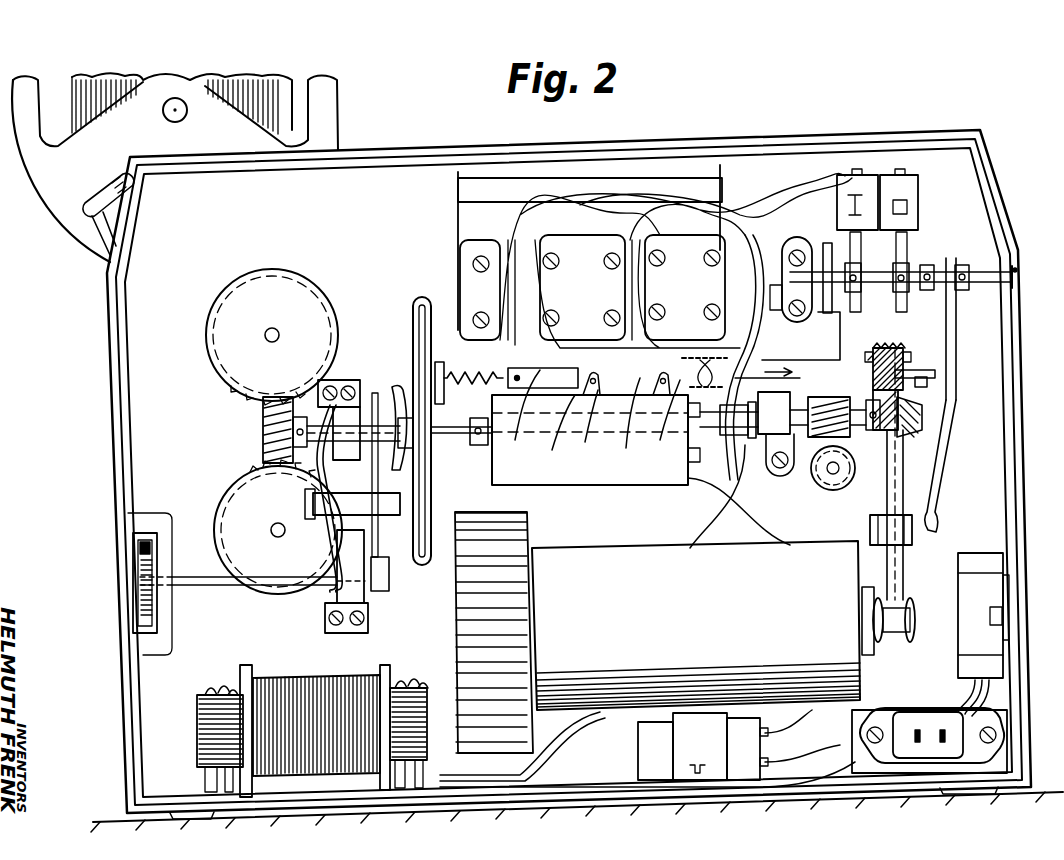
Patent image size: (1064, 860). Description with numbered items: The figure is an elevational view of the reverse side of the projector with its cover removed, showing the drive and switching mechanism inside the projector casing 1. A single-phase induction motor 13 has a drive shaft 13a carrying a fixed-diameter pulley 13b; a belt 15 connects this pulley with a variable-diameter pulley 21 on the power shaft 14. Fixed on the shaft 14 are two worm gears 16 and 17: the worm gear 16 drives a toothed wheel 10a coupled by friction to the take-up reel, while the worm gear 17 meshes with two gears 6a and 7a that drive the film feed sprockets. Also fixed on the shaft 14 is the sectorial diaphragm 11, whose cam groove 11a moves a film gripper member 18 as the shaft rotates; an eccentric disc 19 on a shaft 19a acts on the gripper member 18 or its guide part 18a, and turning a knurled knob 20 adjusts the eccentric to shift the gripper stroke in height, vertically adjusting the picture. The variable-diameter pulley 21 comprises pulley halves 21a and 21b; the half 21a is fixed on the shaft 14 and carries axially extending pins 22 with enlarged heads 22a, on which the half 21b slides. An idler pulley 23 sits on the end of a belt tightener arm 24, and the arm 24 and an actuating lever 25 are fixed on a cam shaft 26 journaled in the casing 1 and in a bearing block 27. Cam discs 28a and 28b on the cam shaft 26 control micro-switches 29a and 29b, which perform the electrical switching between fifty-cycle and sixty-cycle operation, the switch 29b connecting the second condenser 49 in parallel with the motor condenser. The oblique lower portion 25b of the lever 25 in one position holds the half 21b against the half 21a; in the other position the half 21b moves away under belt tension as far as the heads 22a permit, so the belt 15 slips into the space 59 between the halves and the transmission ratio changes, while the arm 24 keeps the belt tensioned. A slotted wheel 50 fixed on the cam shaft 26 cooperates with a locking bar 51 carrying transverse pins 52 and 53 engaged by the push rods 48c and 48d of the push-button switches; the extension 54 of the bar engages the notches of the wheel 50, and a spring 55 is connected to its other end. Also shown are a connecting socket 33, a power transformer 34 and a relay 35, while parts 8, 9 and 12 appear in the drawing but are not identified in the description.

The projector casing 1 is at (148, 403).
The gear 6a is at (272, 290).
The gear 7a is at (242, 505).
The clamp 8 is at (65, 205).
The clamp bracket 9 is at (95, 232).
The toothed wheel 10a is at (838, 475).
The sectorial diaphragm 11 is at (431, 495).
The cam groove 11a is at (414, 388).
The lever 12 is at (396, 393).
The single-phase induction motor 13 is at (620, 565).
The drive shaft 13a is at (872, 640).
The fixed-diameter pulley 13b is at (908, 630).
The power shaft 14 is at (466, 430).
The belt 15 is at (895, 580).
The worm gear 16 is at (808, 440).
The worm gear 17 is at (262, 440).
The film gripper member 18 is at (390, 485).
The guide part 18a is at (388, 560).
The eccentric disc 19 is at (378, 592).
The shaft 19a is at (210, 584).
The knurled knob 20 is at (135, 583).
The variable-diameter pulley 21 is at (915, 485).
The pulley half 21a is at (875, 350).
The pulley half 21b is at (912, 343).
The pins 22 is at (920, 456).
The enlarged heads 22a is at (920, 378).
The idler pulley 23 is at (905, 538).
The belt tightener arm 24 is at (957, 345).
The actuating lever 25 is at (948, 361).
The oblique portion 25b is at (935, 408).
The cam shaft 26 is at (985, 282).
The bearing block 27 is at (792, 312).
The cam disc 28a is at (852, 262).
The cam disc 28b is at (906, 258).
The micro-switch 29a is at (852, 186).
The micro-switch 29b is at (905, 185).
The connecting socket 33 is at (935, 712).
The power transformer 34 is at (312, 695).
The relay 35 is at (980, 568).
The push rod 48c is at (551, 435).
The push rod 48d is at (627, 427).
The second condenser 49 is at (588, 483).
The slotted wheel 50 is at (826, 262).
The locking bar 51 is at (522, 417).
The pin 52 is at (586, 425).
The pin 53 is at (666, 420).
The extension 54 is at (828, 336).
The spring 55 is at (472, 386).
The space 59 is at (873, 355).